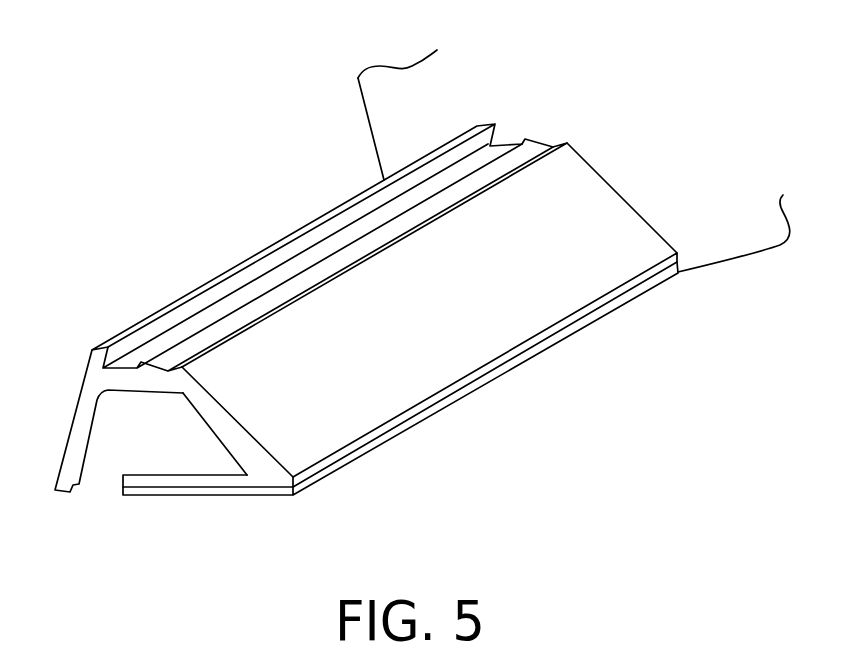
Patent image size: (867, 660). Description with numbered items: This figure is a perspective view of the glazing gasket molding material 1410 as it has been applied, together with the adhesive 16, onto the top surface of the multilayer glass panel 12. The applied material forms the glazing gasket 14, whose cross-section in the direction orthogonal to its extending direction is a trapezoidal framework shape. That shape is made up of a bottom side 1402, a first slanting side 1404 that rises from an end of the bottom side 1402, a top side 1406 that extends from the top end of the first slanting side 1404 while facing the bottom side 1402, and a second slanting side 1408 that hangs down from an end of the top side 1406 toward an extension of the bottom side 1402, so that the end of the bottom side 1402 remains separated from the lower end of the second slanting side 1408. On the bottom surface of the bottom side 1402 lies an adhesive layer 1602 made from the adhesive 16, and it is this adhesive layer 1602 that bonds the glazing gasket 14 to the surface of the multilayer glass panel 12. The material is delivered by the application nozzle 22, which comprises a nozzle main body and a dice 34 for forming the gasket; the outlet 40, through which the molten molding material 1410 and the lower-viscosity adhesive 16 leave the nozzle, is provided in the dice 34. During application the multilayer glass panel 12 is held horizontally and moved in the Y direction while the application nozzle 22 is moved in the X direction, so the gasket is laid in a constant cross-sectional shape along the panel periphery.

The multilayer glass panel 12 is at (81, 561).
The glazing gasket 14 is at (329, 301).
The glazing gasket molding material 1410 is at (329, 245).
The adhesive 16 is at (400, 413).
The adhesive layer 1602 is at (263, 498).
The bottom side 1402 is at (195, 483).
The first slanting side 1404 is at (235, 430).
The top side 1406 is at (158, 377).
The second slanting side 1408 is at (77, 430).
The application nozzle 22 is at (413, 91).
The dice 34 is at (392, 122).
The outlet 40 is at (630, 166).